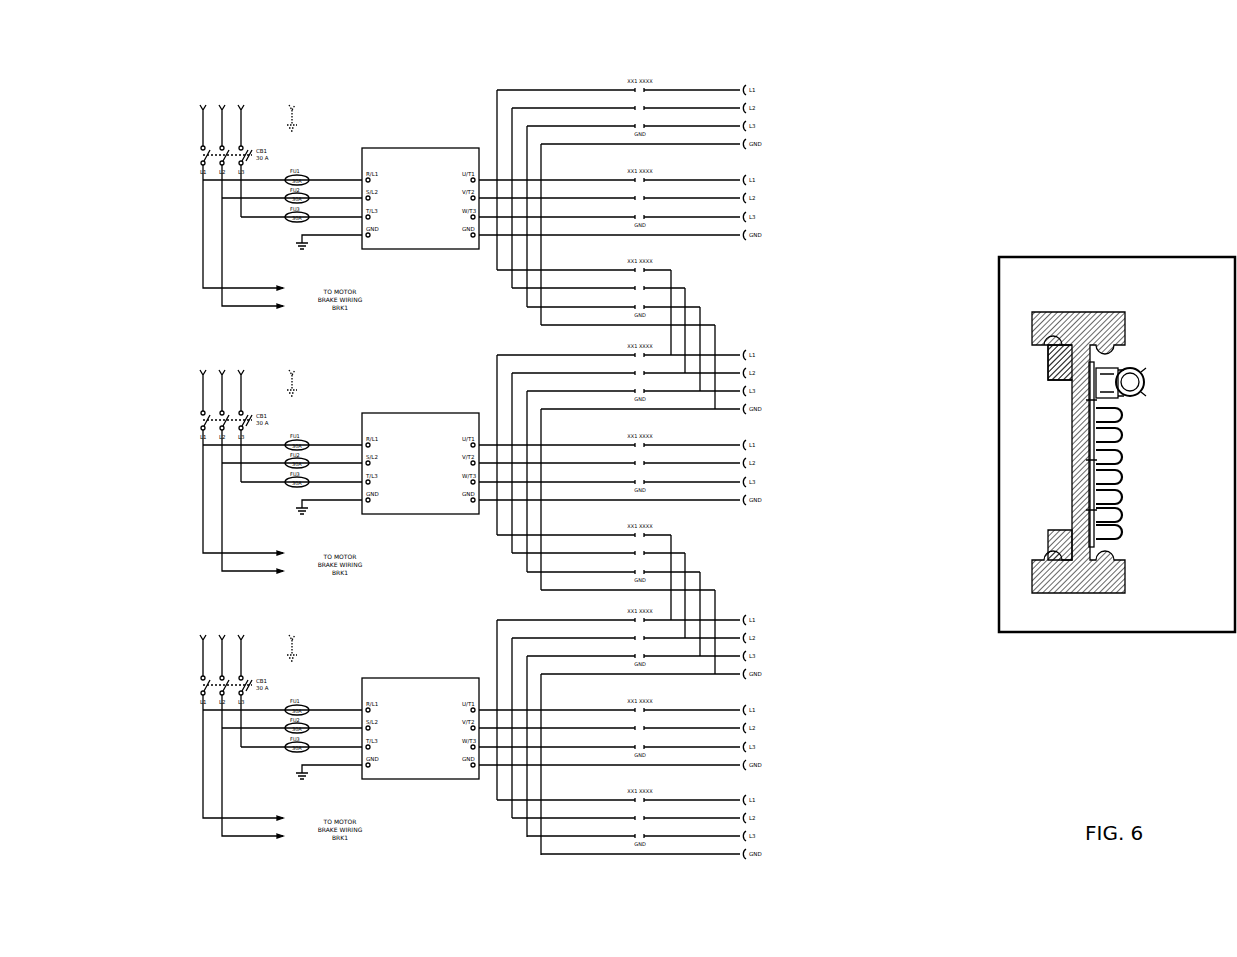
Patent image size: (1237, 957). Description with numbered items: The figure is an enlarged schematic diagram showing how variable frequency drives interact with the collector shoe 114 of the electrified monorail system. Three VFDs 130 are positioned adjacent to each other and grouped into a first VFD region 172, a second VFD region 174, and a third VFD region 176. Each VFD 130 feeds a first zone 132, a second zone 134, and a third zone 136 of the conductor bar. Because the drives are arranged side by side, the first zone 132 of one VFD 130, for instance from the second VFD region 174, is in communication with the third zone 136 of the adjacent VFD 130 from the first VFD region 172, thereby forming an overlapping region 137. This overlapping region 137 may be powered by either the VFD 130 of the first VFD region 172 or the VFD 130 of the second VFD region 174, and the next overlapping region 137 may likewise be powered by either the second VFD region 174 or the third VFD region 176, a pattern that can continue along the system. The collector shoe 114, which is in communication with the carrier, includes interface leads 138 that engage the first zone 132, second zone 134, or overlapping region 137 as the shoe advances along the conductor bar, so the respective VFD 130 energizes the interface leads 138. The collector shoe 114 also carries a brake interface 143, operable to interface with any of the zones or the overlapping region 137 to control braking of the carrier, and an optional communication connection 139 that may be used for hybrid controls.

The collector shoe 114 is at (1127, 272).
The VFD 130 is at (413, 178).
The first zone 132 is at (898, 103).
The second zone 134 is at (878, 202).
The third zone 136 is at (680, 272).
The overlapping region 137 is at (765, 333).
The interface leads 138 is at (1133, 498).
The optional communication connection 139 is at (1135, 367).
The brake interface 143 is at (1142, 430).
The first VFD region 172 is at (358, 118).
The second VFD region 174 is at (363, 391).
The third VFD region 176 is at (366, 657).